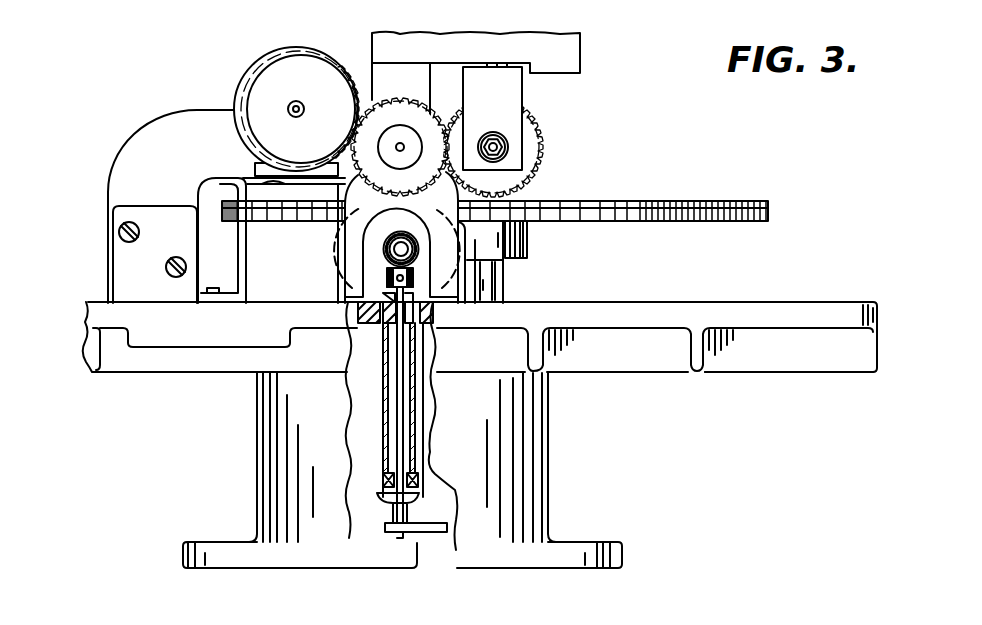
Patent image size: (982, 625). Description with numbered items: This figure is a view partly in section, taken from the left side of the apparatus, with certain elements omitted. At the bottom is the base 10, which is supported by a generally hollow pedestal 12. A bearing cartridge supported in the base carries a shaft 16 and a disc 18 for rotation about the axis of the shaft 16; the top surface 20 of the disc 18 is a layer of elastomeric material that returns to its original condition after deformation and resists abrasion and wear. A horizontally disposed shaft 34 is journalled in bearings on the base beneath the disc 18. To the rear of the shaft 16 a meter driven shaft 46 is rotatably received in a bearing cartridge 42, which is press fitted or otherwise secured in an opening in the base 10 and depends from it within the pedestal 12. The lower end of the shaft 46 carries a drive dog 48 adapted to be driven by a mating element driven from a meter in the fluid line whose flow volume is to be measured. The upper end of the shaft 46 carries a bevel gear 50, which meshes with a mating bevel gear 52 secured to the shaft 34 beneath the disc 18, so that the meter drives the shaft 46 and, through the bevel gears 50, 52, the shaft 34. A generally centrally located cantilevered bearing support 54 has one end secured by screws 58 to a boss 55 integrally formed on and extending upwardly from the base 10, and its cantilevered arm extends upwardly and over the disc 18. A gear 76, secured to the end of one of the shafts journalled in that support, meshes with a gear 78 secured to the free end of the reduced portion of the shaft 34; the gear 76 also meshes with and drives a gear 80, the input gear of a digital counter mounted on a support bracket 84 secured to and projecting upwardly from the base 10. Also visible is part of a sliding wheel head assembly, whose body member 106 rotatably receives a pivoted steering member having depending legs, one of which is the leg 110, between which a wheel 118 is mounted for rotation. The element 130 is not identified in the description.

The base 10 is at (743, 304).
The pedestal 12 is at (256, 431).
The shaft 16 is at (503, 278).
The disc 18 is at (632, 222).
The top surface 20 is at (495, 210).
The shaft 34 is at (385, 250).
The bearing cartridge 42 is at (383, 404).
The meter driven shaft 46 is at (408, 404).
The drive dog 48 is at (438, 536).
The bevel gear 50 is at (388, 276).
The bevel gear 52 is at (388, 238).
The cantilevered bearing support 54 is at (148, 126).
The boss 55 is at (113, 254).
The screws 58 is at (150, 279).
The gear 76 is at (395, 108).
The gear 78 is at (460, 223).
The gear 80 is at (258, 64).
The support bracket 84 is at (246, 242).
The body member 106 is at (570, 58).
The depending leg 110 is at (518, 90).
The wheel 118 is at (542, 166).
The hanger bracket 130 is at (370, 72).